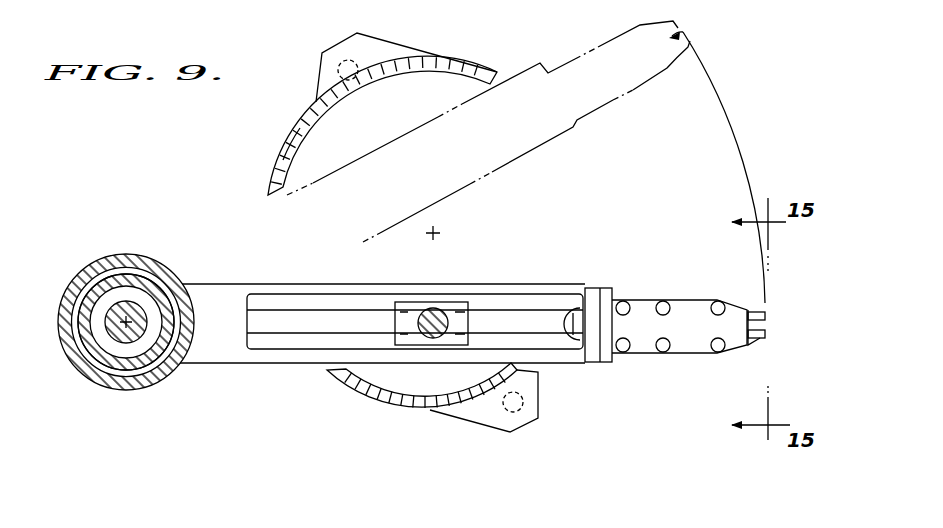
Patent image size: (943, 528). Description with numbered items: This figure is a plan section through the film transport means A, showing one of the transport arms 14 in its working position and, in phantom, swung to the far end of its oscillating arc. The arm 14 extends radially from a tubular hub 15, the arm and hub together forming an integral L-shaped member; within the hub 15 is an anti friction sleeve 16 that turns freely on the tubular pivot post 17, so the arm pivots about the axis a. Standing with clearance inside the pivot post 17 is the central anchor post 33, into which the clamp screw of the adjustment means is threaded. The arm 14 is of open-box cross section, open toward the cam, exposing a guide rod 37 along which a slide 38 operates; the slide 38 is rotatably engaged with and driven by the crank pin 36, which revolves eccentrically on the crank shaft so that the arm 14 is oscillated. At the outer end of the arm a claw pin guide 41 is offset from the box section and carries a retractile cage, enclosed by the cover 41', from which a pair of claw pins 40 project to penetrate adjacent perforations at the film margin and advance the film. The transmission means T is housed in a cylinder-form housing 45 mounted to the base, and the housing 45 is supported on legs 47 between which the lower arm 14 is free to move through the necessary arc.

The transport arm 14 is at (556, 287).
The tubular hub 15 is at (133, 254).
The anti friction sleeve 16 is at (100, 352).
The tubular pivot post 17 is at (124, 373).
The central anchor post 33 is at (134, 304).
The crank pin 36 is at (436, 312).
The guide rod 37 is at (332, 311).
The slide 38 is at (409, 302).
The claw pin 40 is at (768, 316).
The claw pin guide 41 is at (679, 354).
The cover 41' is at (718, 351).
The housing 45 is at (481, 71).
The leg 47 is at (312, 113).
The pivot axis a is at (118, 327).
The transport means A is at (241, 358).
The transmission means T is at (280, 152).